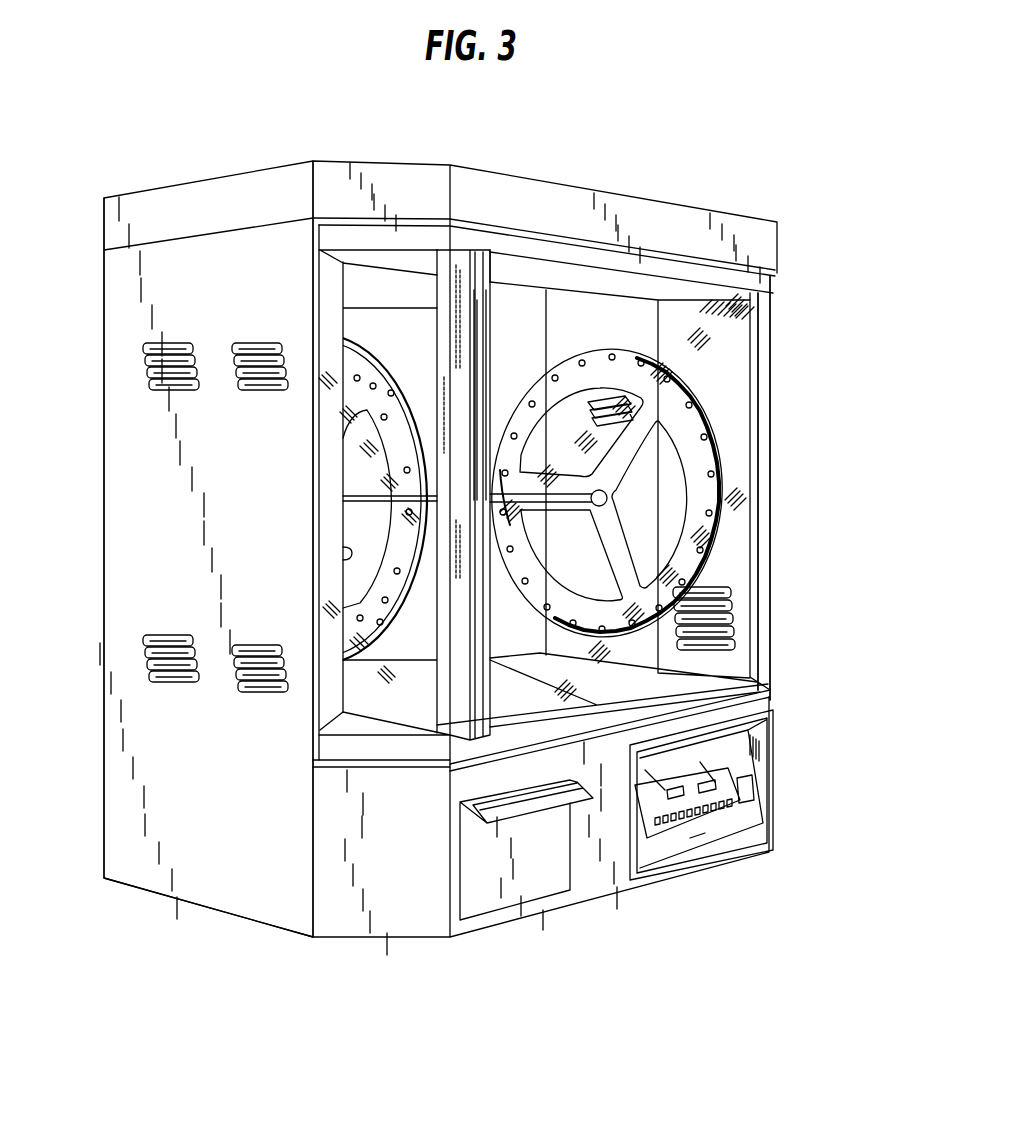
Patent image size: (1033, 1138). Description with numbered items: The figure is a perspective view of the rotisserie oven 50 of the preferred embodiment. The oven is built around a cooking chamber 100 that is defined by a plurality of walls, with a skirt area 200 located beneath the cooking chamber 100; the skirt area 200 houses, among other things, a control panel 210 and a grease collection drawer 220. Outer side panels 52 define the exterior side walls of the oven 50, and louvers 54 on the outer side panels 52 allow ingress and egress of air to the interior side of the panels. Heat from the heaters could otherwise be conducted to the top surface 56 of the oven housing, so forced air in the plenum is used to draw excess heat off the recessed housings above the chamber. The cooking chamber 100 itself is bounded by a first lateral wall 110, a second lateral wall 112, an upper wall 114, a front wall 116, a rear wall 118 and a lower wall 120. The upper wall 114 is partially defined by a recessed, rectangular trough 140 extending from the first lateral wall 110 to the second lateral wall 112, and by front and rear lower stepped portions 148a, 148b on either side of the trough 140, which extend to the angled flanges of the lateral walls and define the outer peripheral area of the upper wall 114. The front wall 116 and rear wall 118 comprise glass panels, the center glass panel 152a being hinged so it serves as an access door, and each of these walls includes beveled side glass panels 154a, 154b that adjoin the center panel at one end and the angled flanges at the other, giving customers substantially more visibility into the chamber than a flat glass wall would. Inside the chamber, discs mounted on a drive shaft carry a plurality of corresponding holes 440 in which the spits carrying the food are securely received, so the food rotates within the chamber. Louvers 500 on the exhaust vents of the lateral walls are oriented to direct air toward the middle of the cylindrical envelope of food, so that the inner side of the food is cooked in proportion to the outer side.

The rotisserie oven 50 is at (659, 143).
The outer side panels 52 is at (268, 467).
The louvers 54 is at (250, 388).
The top surface 56 is at (358, 163).
The cooking chamber 100 is at (419, 349).
The first lateral wall 110 is at (647, 338).
The second lateral wall 112 is at (352, 549).
The upper wall 114 is at (698, 300).
The front wall 116 is at (727, 567).
The rear wall 118 is at (527, 350).
The lower wall 120 is at (362, 694).
The recessed rectangular trough 140 is at (505, 288).
The front lower stepped portion 148a is at (697, 282).
The rear lower stepped portion 148b is at (377, 288).
The glass panel 152a is at (757, 683).
The beveled side glass panel 154a is at (775, 600).
The beveled side glass panel 154b is at (308, 708).
The skirt area 200 is at (780, 707).
The control panel 210 is at (697, 843).
The grease collection drawer 220 is at (547, 883).
The holes 440 is at (678, 430).
The louvers 500 is at (590, 413).